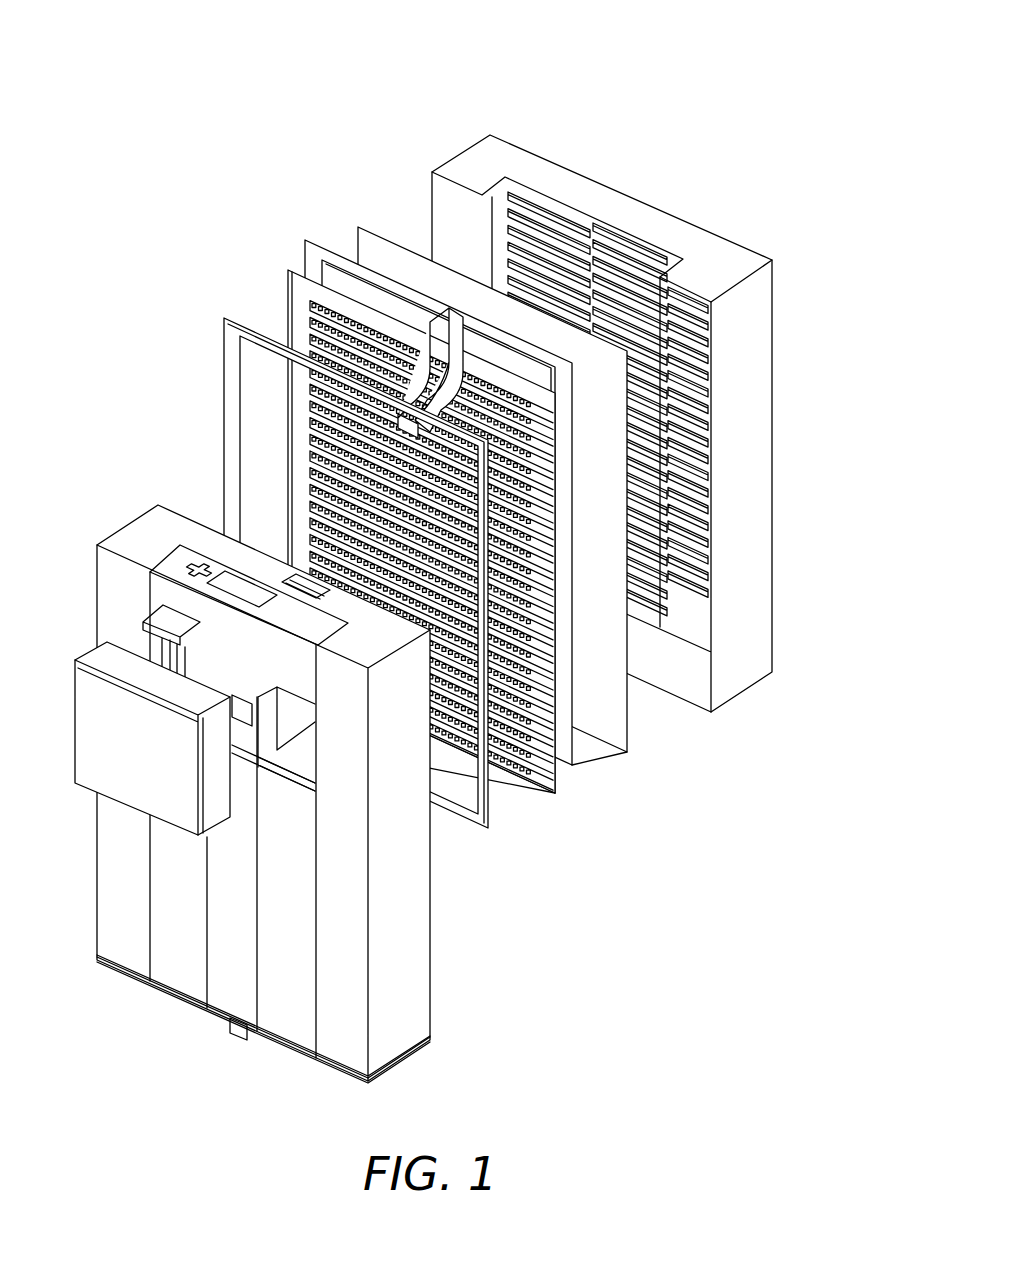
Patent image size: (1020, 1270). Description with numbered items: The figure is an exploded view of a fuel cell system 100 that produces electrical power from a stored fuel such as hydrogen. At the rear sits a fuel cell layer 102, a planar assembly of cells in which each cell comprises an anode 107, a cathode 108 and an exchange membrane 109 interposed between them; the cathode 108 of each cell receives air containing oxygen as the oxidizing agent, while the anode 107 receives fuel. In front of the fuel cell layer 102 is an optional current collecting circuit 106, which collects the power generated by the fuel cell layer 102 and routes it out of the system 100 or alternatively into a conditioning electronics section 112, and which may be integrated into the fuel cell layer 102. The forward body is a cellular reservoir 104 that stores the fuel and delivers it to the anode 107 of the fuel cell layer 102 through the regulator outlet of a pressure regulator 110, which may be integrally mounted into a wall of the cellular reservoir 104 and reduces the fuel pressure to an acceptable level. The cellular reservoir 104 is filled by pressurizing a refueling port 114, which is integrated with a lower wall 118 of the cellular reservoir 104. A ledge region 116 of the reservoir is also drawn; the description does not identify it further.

The fuel cell system 100 is at (709, 75).
The fuel cell layer 102 is at (548, 806).
The cellular reservoir 104 is at (258, 802).
The current collecting circuit 106 is at (589, 750).
The anode 107 is at (518, 772).
The cathode 108 is at (392, 547).
The exchange membrane 109 is at (557, 790).
The pressure regulator 110 is at (298, 708).
The conditioning electronics section 112 is at (76, 662).
The refueling port 114 is at (230, 1023).
The ledge 116 is at (305, 768).
The lower wall 118 is at (283, 1042).